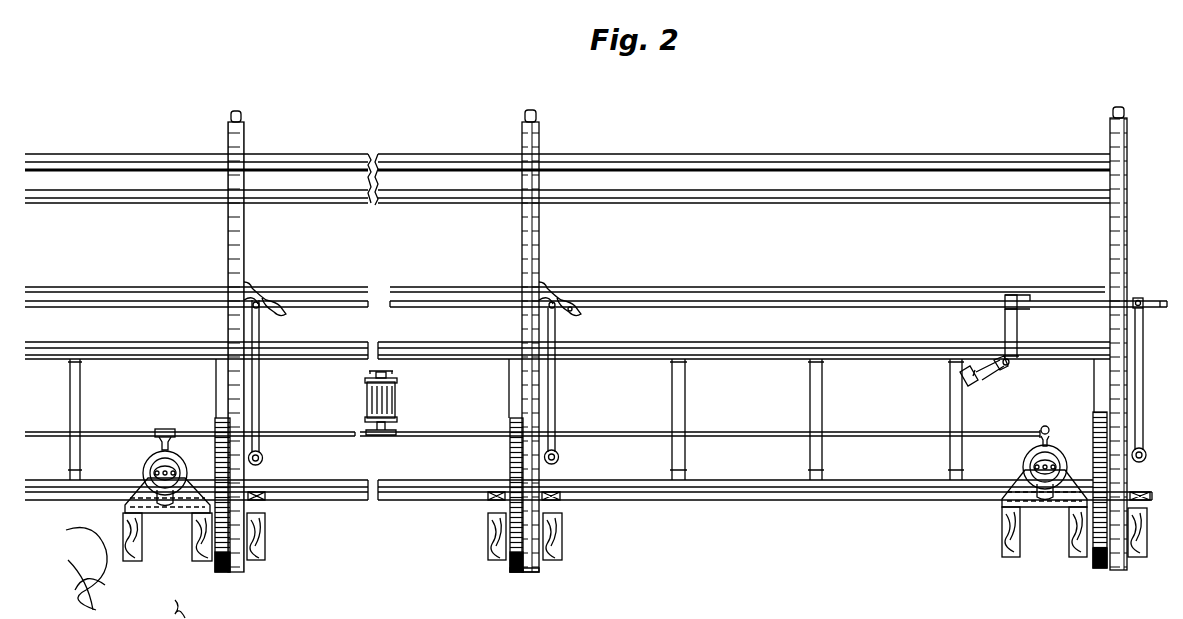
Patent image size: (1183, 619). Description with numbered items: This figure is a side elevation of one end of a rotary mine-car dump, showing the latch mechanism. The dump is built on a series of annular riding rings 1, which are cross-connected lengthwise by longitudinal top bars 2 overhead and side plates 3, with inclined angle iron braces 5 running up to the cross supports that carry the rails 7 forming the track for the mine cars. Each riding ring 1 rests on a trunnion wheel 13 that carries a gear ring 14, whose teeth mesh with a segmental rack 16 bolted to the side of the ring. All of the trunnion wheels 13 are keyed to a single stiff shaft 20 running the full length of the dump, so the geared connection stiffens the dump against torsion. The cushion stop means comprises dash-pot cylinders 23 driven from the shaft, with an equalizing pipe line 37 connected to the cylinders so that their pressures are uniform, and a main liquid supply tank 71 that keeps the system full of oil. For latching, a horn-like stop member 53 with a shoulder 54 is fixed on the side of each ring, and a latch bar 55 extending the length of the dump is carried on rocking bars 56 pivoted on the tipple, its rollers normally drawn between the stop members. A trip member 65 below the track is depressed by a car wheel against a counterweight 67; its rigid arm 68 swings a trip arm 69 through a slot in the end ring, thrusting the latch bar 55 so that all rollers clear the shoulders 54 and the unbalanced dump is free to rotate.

The riding ring 1 is at (244, 119).
The top bar 2 is at (886, 188).
The side plate 3 is at (710, 292).
The inclined angle iron brace 5 is at (682, 412).
The rail 7 is at (798, 343).
The trunnion wheel 13 is at (536, 572).
The gear ring 14 is at (516, 572).
The segmental rack 16 is at (215, 424).
The shaft 20 is at (668, 500).
The cylinder 23 is at (140, 472).
The equalizing pipe line 37 is at (452, 430).
The stop member 53 is at (548, 286).
The shoulder 54 is at (556, 310).
The latch bar 55 is at (750, 309).
The rocking bar 56 is at (556, 416).
The trip member 65 is at (1018, 360).
The counterweight 67 is at (968, 384).
The arm 68 is at (1005, 332).
The trip arm 69 is at (1028, 296).
The liquid supply tank 71 is at (396, 395).